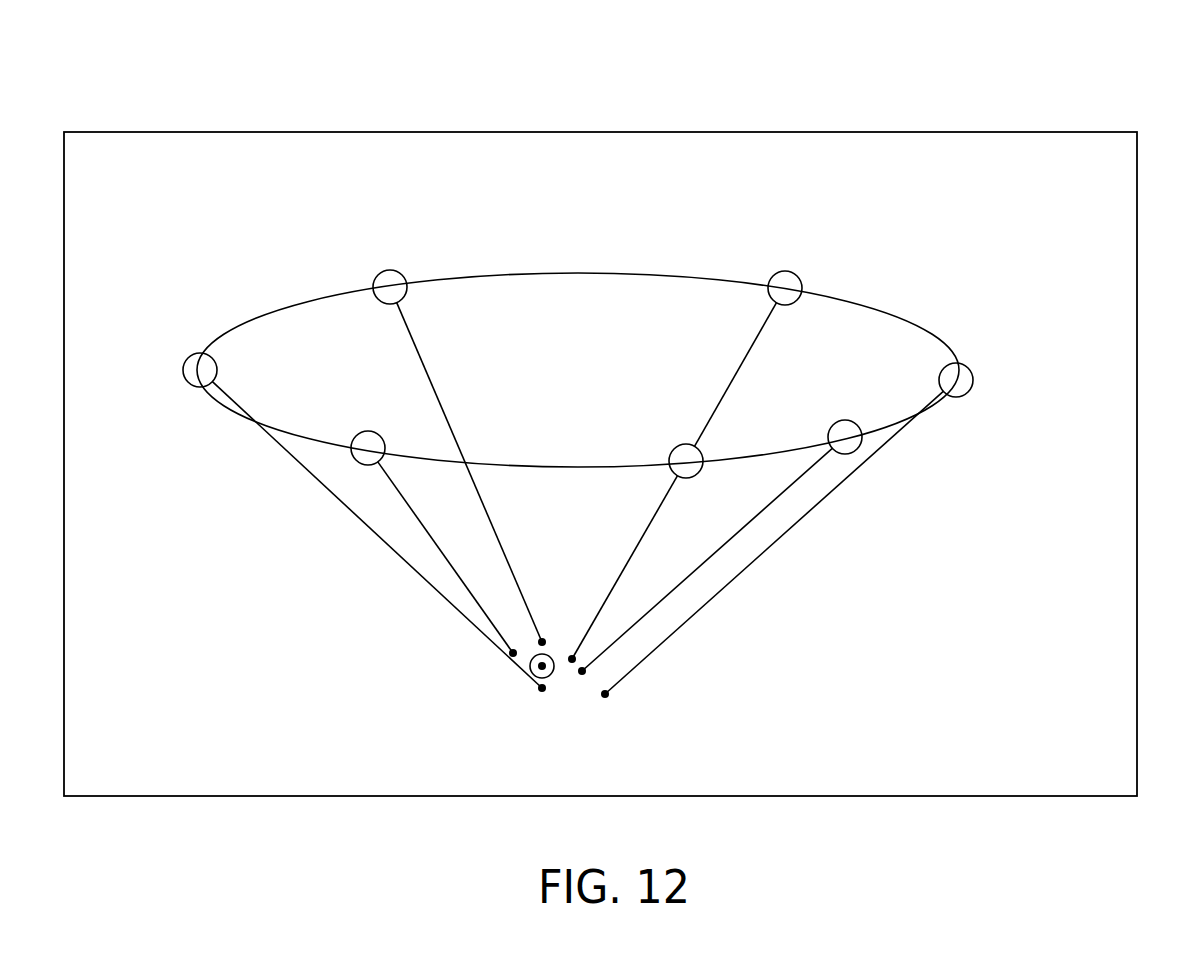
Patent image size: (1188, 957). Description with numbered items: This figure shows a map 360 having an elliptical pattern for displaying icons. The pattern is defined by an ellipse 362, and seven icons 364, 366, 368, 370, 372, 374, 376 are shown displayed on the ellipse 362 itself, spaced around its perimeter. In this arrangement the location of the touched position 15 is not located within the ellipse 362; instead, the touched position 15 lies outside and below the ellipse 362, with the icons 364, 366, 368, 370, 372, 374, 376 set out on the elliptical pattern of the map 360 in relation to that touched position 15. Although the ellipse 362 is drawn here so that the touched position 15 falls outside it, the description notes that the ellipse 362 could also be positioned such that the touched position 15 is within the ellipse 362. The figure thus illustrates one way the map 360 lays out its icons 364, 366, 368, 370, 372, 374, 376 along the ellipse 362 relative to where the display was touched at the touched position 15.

The map 360 is at (1020, 105).
The ellipse 362 is at (630, 273).
The icon 364 is at (792, 272).
The icon 366 is at (972, 376).
The icon 368 is at (852, 421).
The icon 370 is at (698, 478).
The icon 372 is at (360, 464).
The icon 374 is at (186, 359).
The icon 376 is at (377, 276).
The touched position 15 is at (553, 671).